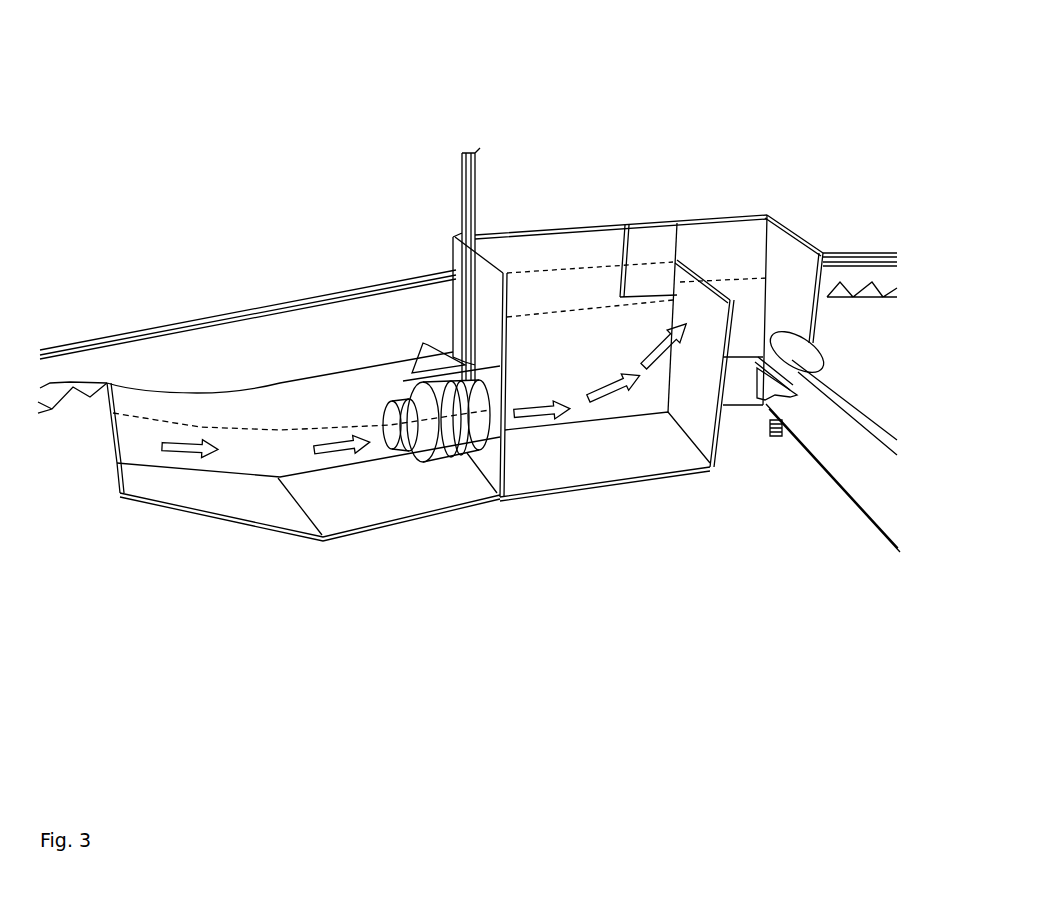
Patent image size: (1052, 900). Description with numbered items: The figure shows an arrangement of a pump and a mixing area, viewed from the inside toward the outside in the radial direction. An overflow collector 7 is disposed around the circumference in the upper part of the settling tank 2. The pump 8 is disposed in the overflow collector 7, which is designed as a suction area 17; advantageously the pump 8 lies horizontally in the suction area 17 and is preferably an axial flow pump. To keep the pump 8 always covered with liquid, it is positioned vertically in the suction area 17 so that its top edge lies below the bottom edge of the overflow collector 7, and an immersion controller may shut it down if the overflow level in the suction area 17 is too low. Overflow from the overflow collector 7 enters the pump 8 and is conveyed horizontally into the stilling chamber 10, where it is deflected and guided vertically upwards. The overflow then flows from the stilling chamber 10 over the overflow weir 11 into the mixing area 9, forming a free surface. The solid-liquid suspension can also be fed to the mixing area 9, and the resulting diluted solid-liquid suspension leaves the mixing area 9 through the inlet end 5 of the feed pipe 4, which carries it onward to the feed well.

The settling tank 2 is at (218, 313).
The feed pipe 4 is at (862, 463).
The inlet end 5 is at (787, 368).
The overflow collector 7 is at (57, 380).
The pump 8 is at (433, 427).
The mixing area 9 is at (753, 330).
The stilling chamber 10 is at (608, 343).
The overflow weir 11 is at (710, 288).
The suction area 17 is at (245, 498).